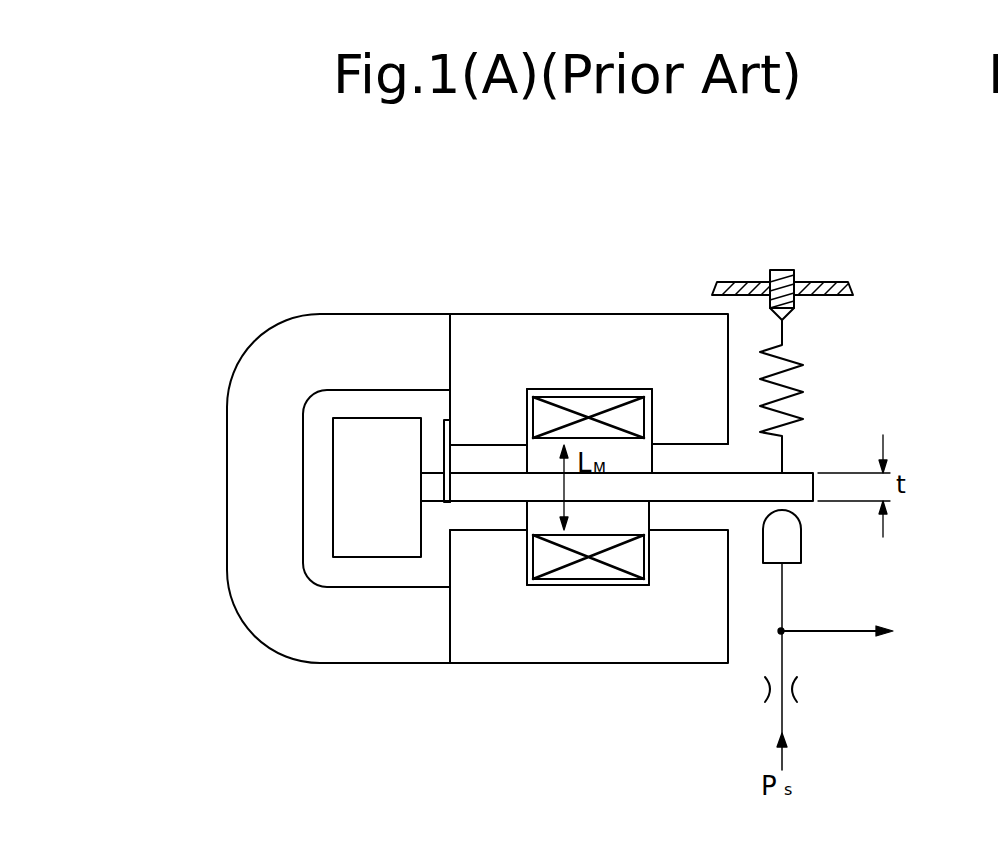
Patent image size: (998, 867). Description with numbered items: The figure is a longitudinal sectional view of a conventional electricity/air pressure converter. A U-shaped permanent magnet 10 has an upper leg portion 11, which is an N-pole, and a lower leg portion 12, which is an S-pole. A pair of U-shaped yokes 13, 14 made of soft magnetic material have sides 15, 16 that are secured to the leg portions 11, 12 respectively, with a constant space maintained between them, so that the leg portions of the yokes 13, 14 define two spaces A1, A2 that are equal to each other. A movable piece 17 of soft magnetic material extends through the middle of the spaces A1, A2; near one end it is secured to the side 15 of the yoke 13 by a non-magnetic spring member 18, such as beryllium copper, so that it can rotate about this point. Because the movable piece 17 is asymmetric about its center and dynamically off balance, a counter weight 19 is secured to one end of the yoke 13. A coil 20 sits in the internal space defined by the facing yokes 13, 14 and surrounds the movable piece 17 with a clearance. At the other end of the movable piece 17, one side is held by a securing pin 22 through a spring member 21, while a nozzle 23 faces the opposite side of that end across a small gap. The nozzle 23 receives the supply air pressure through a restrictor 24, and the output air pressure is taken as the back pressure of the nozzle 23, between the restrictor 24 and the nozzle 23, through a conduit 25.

The U-shaped permanent magnet 10 is at (256, 412).
The upper leg portion 11 is at (298, 333).
The lower leg portion 12 is at (300, 630).
The U-shaped yoke 13 is at (537, 347).
The U-shaped yoke 14 is at (607, 637).
The side of yoke 15 is at (450, 333).
The side of yoke 16 is at (450, 638).
The movable piece 17 is at (814, 488).
The spring member 18 is at (446, 420).
The counter weight 19 is at (348, 520).
The coil 20 is at (590, 403).
The spring member 21 is at (803, 378).
The securing pin 22 is at (797, 268).
The nozzle 23 is at (801, 553).
The restrictor 24 is at (797, 688).
The conduit 25 is at (833, 631).
The space A1 is at (480, 460).
The space A2 is at (683, 457).